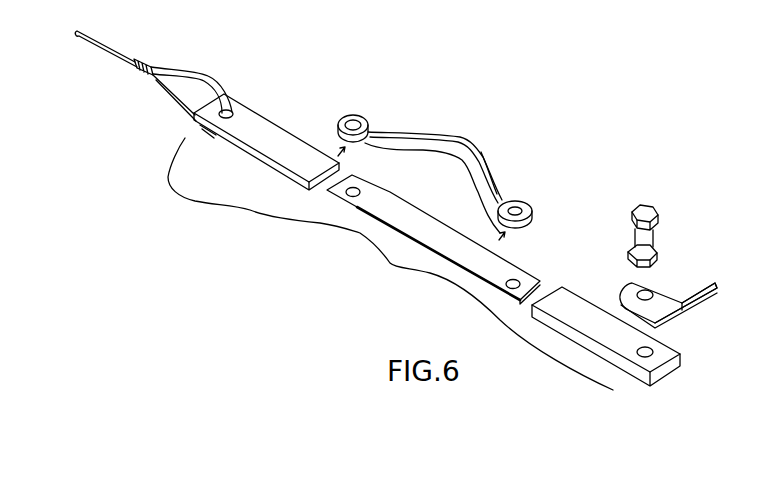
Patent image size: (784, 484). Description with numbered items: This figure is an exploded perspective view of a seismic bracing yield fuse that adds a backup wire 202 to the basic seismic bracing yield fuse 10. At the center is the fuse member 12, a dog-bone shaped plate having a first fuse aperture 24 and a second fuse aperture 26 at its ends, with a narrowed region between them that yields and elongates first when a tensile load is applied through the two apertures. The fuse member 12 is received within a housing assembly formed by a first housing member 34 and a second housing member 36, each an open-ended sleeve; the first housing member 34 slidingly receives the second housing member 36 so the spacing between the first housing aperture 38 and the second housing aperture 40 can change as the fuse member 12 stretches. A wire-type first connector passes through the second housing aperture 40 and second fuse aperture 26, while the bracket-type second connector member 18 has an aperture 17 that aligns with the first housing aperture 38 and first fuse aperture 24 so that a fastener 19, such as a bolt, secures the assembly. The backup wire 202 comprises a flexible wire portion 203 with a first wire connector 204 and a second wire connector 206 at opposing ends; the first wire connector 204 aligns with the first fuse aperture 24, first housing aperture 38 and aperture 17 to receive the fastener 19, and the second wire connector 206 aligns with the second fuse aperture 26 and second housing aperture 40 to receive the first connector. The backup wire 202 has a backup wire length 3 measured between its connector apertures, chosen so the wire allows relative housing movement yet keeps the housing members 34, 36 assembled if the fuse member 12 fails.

The length L3 3 is at (554, 226).
The seismic bracing yield fuse 10 is at (390, 264).
The fuse member 12 is at (448, 231).
The aperture 17 is at (695, 291).
The second connector member 18 is at (719, 288).
The fastener 19 is at (658, 232).
The first fuse aperture 24 is at (518, 281).
The second fuse aperture 26 is at (358, 187).
The first housing member 34 is at (627, 322).
The second housing member 36 is at (207, 110).
The first housing aperture 38 is at (653, 350).
The second housing aperture 40 is at (234, 112).
The backup wire 202 is at (486, 129).
The wire portion 203 is at (488, 167).
The first wire connector 204 is at (528, 206).
The second wire connector 206 is at (367, 111).